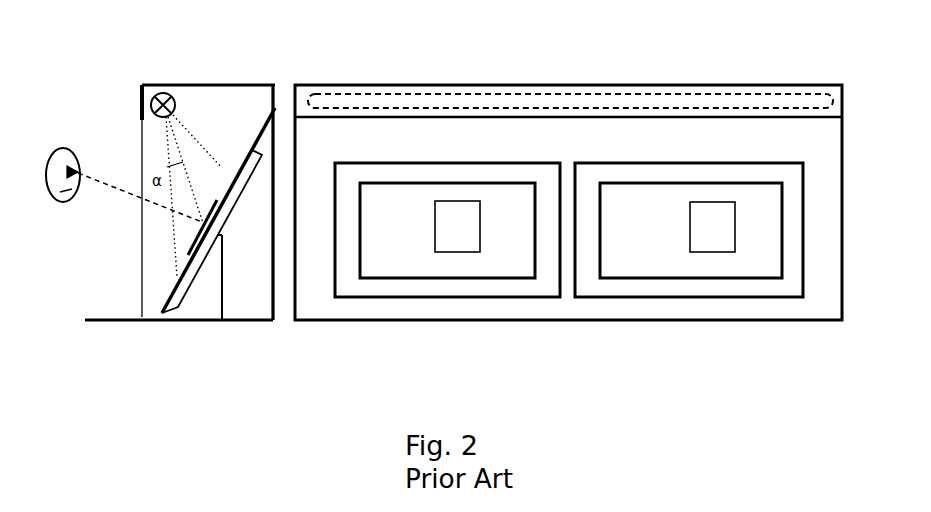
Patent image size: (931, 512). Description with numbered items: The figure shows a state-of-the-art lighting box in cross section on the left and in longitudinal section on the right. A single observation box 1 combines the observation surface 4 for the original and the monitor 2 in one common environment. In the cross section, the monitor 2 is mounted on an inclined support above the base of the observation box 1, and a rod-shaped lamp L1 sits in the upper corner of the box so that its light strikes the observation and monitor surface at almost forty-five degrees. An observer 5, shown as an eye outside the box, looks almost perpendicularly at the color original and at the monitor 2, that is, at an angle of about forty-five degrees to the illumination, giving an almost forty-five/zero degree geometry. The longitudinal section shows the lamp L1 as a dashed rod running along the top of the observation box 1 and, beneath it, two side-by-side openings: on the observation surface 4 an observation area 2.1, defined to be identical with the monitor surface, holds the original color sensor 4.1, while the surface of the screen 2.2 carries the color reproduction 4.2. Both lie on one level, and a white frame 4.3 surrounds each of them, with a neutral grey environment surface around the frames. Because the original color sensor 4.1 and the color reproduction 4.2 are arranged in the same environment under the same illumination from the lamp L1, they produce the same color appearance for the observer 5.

The observation box 1 is at (253, 320).
The monitor or screen 2 is at (232, 205).
The observation area 2.1 is at (410, 211).
The surface of a screen 2.2 is at (645, 212).
The observation surface 4 is at (320, 182).
The color sensor/original 4.1 is at (452, 228).
The color reproduction 4.2 is at (703, 235).
The frame 4.3 is at (382, 285).
The observer 5 is at (60, 203).
The lamp L1 is at (172, 95).